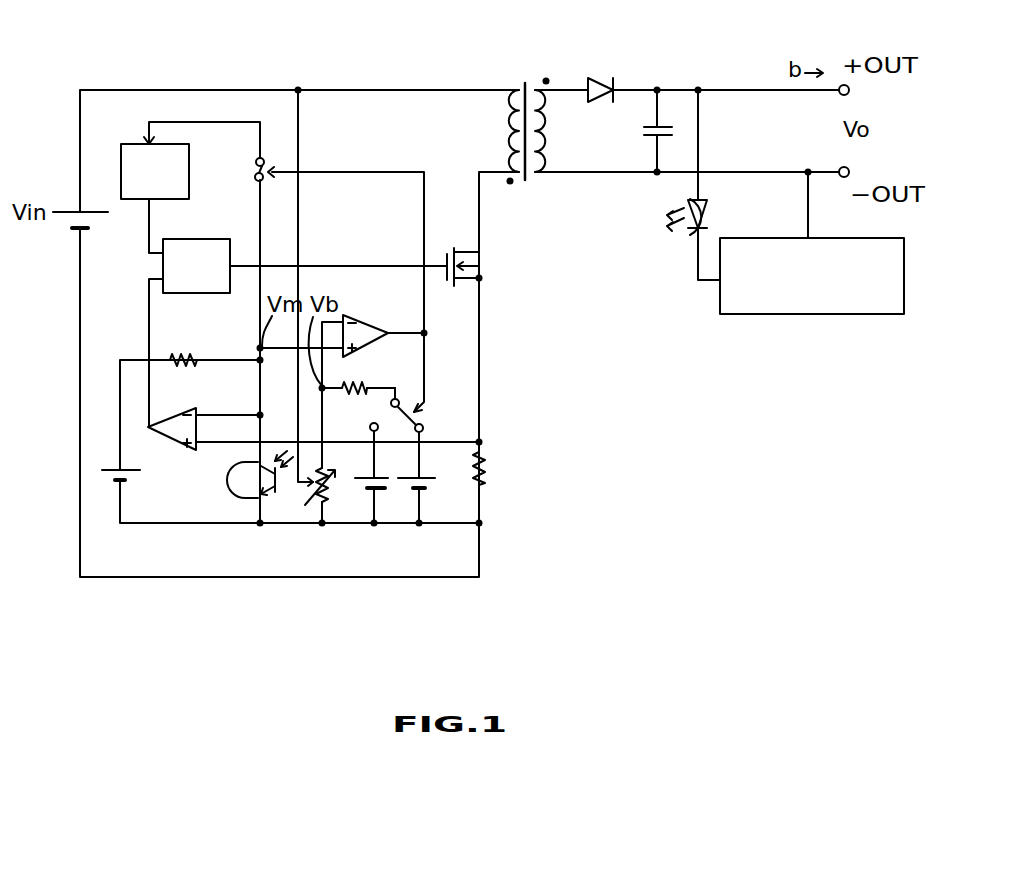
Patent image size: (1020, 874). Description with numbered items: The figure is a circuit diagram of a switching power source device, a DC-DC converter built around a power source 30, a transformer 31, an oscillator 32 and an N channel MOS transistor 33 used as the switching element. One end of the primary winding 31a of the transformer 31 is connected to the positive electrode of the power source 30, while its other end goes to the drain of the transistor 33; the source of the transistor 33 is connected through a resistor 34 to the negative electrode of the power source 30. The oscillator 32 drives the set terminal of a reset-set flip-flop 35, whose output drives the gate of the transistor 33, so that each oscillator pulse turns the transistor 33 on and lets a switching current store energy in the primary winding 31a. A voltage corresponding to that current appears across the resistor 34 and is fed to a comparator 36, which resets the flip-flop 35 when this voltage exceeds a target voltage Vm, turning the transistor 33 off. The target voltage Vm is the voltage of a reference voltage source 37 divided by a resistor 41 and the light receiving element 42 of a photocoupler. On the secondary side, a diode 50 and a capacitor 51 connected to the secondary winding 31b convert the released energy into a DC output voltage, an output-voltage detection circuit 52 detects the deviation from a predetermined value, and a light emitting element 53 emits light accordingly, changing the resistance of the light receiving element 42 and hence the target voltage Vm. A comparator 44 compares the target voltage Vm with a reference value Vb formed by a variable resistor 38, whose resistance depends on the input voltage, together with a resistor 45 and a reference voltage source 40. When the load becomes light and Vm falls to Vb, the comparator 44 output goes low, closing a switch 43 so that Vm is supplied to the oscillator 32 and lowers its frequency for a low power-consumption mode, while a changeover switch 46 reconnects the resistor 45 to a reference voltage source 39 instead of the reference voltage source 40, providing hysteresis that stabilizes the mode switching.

The power source 30 is at (66, 210).
The transformer 31 is at (530, 107).
The primary winding 31a is at (510, 130).
The secondary winding 31b is at (552, 125).
The oscillator 32 is at (120, 145).
The N channel MOS transistor 33 is at (481, 265).
The resistor 34 is at (490, 470).
The reset-set flip-flop 35 is at (205, 239).
The comparator 36 is at (178, 445).
The reference voltage source 37 is at (112, 472).
The variable resistor 38 is at (332, 500).
The reference voltage source 39 is at (387, 493).
The reference voltage source 40 is at (437, 493).
The resistor 41 is at (193, 355).
The light receiving element 42 is at (245, 497).
The switch 43 is at (256, 166).
The comparator 44 is at (376, 322).
The resistor 45 is at (365, 385).
The switch 46 is at (425, 416).
The diode 50 is at (590, 78).
The capacitor 51 is at (652, 135).
The output-voltage detection circuit 52 is at (777, 315).
The light emitting element 53 is at (722, 205).